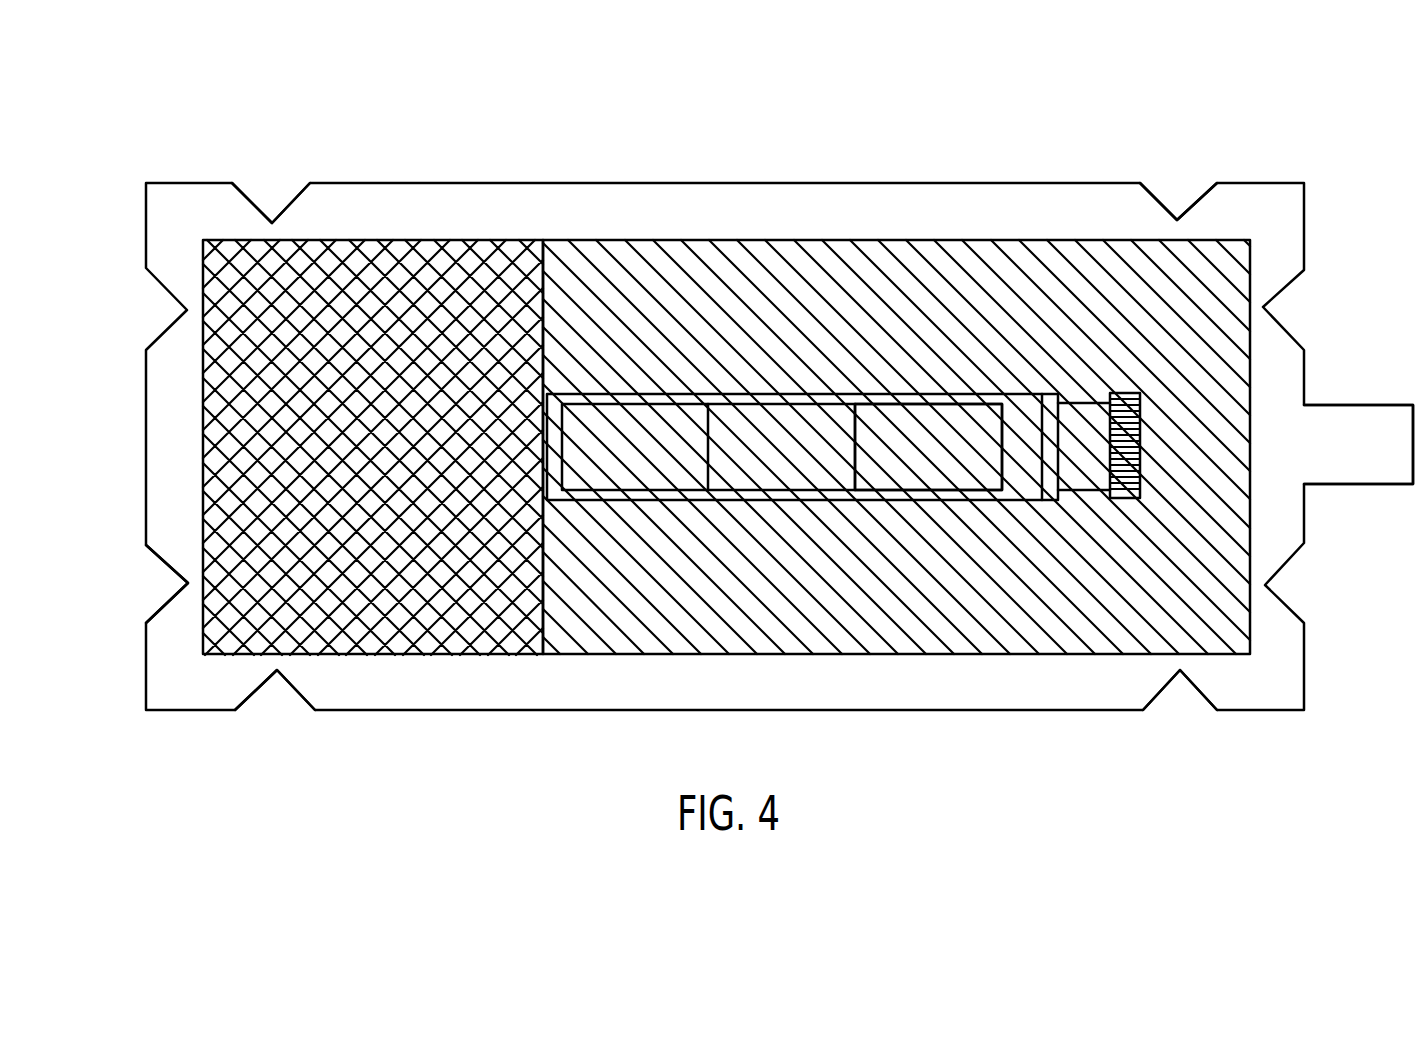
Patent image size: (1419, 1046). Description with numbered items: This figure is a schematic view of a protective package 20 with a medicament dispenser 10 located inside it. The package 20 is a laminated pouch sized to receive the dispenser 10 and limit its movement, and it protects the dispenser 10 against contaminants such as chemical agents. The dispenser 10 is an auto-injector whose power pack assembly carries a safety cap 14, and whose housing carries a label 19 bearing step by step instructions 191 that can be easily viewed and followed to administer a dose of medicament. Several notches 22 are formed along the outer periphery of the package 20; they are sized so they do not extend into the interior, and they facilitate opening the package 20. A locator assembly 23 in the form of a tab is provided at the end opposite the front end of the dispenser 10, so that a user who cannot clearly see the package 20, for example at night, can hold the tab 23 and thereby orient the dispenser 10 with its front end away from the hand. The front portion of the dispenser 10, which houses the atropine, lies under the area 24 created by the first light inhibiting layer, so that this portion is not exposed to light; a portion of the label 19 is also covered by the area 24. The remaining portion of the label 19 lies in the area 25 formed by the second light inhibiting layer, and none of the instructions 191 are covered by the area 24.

The medicament dispenser 10 is at (792, 392).
The safety cap 14 is at (1128, 485).
The label 19 is at (825, 483).
The step by step instructions 191 is at (933, 483).
The protective package 20 is at (757, 150).
The notches 22 is at (270, 212).
The locator assembly 23 is at (1343, 420).
The area created by the first light inhibiting layer 24 is at (358, 277).
The area formed by the second light inhibiting layer 25 is at (705, 625).